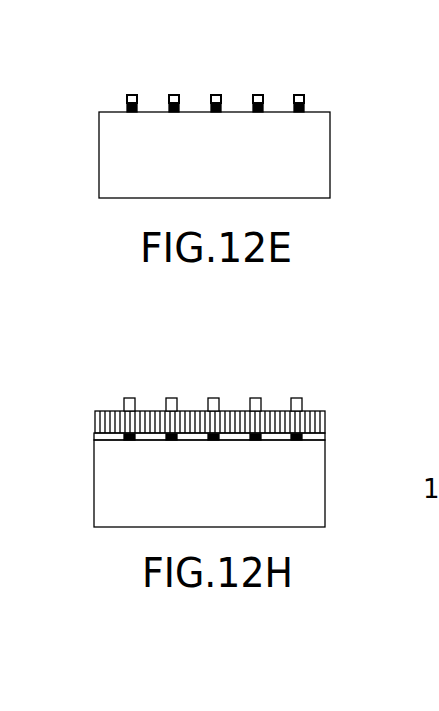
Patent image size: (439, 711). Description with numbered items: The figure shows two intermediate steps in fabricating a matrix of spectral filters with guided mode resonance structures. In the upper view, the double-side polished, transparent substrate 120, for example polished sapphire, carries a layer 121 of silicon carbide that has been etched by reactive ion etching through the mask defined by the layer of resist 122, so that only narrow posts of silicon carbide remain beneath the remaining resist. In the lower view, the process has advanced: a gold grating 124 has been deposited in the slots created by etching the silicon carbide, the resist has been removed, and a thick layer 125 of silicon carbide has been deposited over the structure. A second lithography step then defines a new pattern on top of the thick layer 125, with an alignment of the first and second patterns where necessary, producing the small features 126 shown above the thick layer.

In FIG. 12E, the substrate 120 is at (319, 180).
In FIG. 12H, the substrate 120 is at (320, 515).
In FIG. 12E, the layer of silicon carbide 121 is at (303, 110).
In FIG. 12H, the layer of silicon carbide 121 is at (325, 436).
In FIG. 12E, the layer of resist 122 is at (302, 97).
In FIG. 12H, the gold grating 124 is at (93, 435).
In FIG. 12H, the thick layer of SiC 125 is at (300, 423).
In FIG. 12H, the openings 126 is at (296, 398).